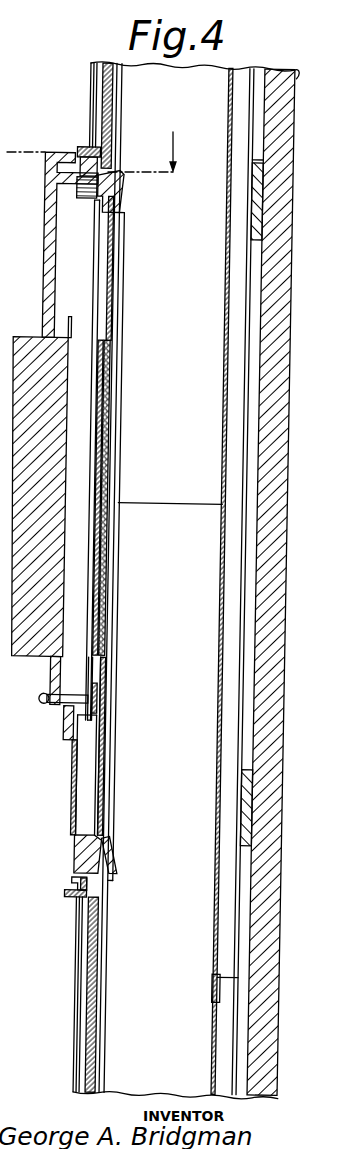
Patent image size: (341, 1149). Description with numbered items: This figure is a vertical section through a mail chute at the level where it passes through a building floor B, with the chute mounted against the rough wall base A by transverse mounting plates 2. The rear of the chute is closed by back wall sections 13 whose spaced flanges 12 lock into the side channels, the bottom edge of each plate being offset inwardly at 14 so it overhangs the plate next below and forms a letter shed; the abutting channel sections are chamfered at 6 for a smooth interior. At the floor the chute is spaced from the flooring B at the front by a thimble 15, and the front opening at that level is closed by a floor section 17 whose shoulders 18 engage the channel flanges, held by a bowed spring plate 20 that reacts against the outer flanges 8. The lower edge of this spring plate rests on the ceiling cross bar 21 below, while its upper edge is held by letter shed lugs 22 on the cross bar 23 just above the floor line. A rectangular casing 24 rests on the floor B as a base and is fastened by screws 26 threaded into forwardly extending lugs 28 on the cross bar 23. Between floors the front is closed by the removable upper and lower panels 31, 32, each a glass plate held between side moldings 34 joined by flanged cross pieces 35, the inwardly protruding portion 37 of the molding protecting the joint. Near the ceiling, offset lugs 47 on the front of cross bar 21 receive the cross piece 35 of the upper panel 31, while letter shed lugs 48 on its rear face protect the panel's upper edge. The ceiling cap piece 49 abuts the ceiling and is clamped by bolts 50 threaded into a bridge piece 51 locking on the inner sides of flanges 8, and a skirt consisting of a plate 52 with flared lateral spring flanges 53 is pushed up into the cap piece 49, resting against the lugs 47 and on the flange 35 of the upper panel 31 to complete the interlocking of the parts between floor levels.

The mounting plate 2 is at (258, 181).
The chamfered abutting end 6 is at (174, 503).
The outer flange 8 is at (92, 673).
The spaced flange 12 is at (155, 158).
The back wall section 13 is at (229, 73).
The inward offset 14 is at (212, 986).
The thimble 15 is at (66, 327).
The floor section 17 is at (114, 332).
The shoulder 18 is at (168, 301).
The bowed spring plate 20 is at (112, 398).
The cross bar 21 is at (85, 851).
The letter shed lug 22 is at (118, 210).
The cross bar 23 is at (97, 196).
The rectangular casing 24 is at (46, 258).
The screw 26 is at (82, 164).
The forwardly extending lug 28 is at (78, 190).
The upper panel 31 is at (96, 946).
The lower panel 32 is at (110, 92).
The molding 34 is at (91, 77).
The flanged cross piece 35 is at (81, 147).
The inwardly protruding portion 37 is at (124, 134).
The offset lug 47 is at (72, 888).
The letter shed lug 48 is at (112, 862).
The ceiling cap piece 49 is at (55, 676).
The bolt 50 is at (57, 714).
The bridge piece 51 is at (98, 697).
The skirt plate 52 is at (72, 770).
The flared lateral spring flange 53 is at (90, 752).
The wall base A is at (273, 393).
The floor B is at (7, 671).